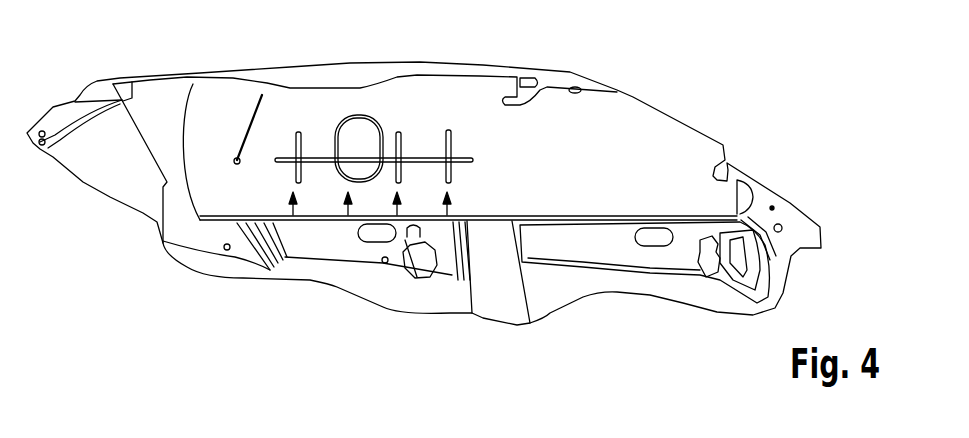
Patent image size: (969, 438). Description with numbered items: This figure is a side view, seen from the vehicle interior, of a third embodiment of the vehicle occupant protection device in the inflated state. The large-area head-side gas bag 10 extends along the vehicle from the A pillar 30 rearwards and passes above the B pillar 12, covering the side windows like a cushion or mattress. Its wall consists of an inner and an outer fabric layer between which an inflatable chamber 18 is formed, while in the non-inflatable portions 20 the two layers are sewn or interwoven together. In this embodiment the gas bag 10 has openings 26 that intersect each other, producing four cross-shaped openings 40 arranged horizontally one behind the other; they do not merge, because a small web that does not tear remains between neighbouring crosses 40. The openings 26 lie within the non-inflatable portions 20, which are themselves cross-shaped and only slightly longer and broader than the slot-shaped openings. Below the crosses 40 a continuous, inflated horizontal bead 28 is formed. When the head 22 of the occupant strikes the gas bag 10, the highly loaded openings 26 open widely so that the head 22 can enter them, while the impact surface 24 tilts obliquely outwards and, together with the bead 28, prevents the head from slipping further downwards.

The side gas bag 10 is at (640, 124).
The B pillar 12 is at (505, 300).
The inflatable chamber 18 is at (287, 113).
The non-inflatable portion 20 is at (470, 140).
The head 22 is at (358, 150).
The impact surface 24 is at (330, 101).
The opening 26 is at (398, 130).
The horizontal bead 28 is at (258, 195).
The A pillar 30 is at (788, 212).
The cross-shaped opening 40 is at (293, 215).